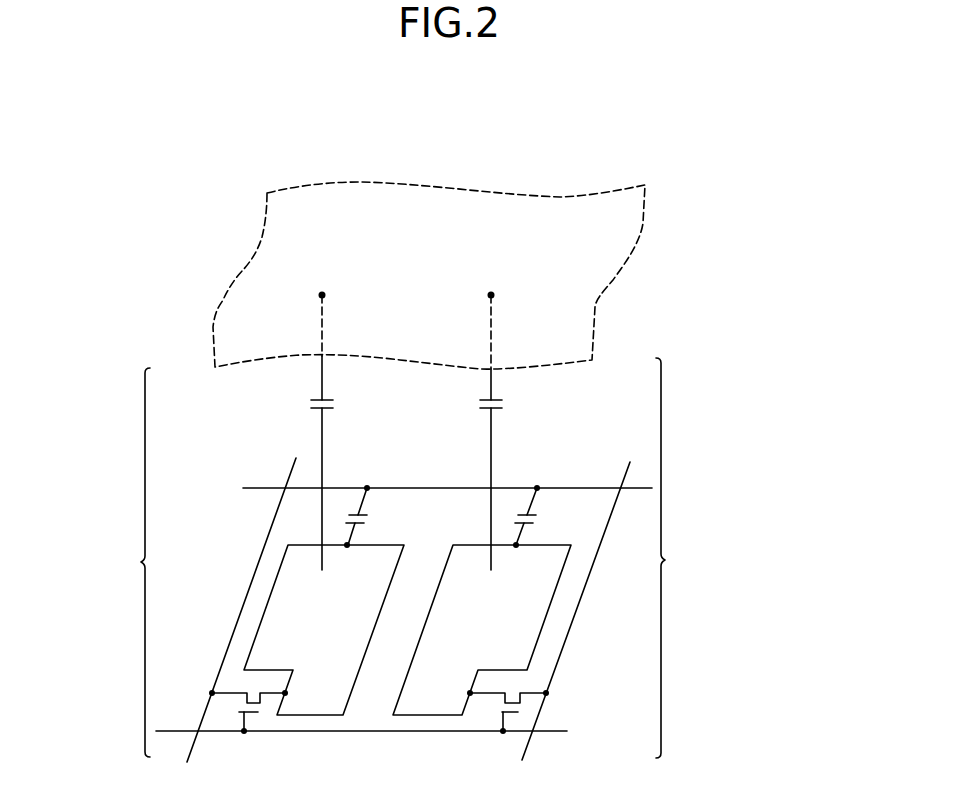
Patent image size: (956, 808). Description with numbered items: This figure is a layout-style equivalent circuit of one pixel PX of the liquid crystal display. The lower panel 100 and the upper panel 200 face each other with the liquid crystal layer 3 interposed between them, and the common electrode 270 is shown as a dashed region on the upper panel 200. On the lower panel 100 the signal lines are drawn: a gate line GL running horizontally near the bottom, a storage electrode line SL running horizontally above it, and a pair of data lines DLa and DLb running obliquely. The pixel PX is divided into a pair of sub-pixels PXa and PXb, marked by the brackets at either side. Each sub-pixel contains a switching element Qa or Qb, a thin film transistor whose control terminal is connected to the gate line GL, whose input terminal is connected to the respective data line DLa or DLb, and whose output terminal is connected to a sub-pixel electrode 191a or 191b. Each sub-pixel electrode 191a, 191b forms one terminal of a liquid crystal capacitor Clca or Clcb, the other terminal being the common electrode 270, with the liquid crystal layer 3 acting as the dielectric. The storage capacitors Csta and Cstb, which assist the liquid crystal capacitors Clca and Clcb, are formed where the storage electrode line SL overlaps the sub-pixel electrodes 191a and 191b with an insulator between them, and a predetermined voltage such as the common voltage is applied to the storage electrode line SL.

The common electrode 270 is at (641, 230).
The upper panel 200 is at (484, 275).
The liquid crystal layer 3 is at (715, 381).
The lower panel 100 is at (725, 615).
The sub-pixel electrode 191a is at (313, 716).
The sub-pixel electrode 191b is at (550, 605).
The pixel PX is at (422, 760).
The sub-pixel PXa is at (125, 562).
The sub-pixel PXb is at (684, 558).
The storage electrode line SL is at (432, 488).
The gate line GL is at (377, 729).
The data line DLa is at (248, 597).
The data line DLb is at (584, 596).
The switching element Qa is at (248, 712).
The switching element Qb is at (508, 712).
The liquid crystal capacitor Clca is at (342, 463).
The liquid crystal capacitor Clcb is at (512, 469).
The storage capacitor Csta is at (378, 516).
The storage capacitor Cstb is at (547, 516).